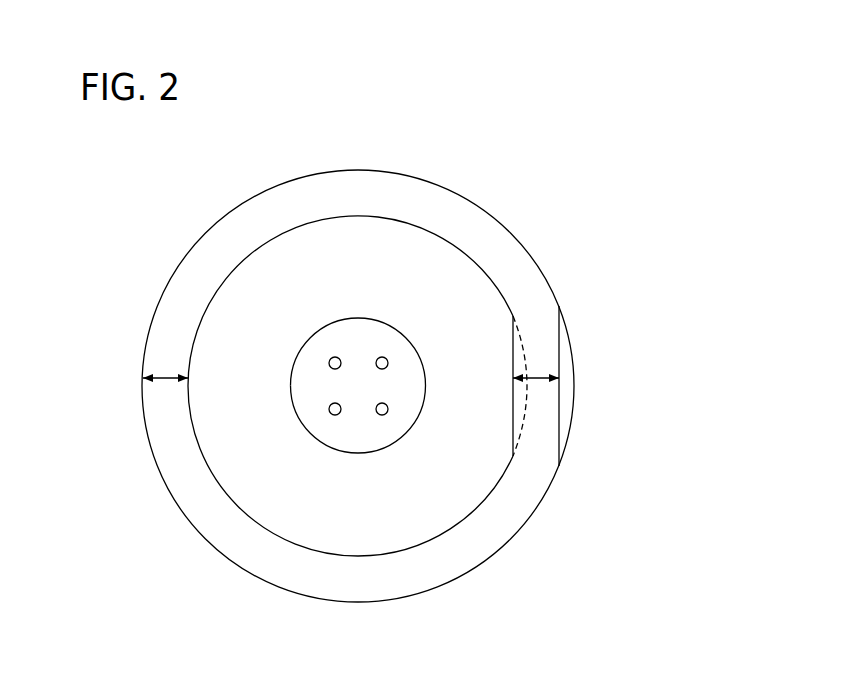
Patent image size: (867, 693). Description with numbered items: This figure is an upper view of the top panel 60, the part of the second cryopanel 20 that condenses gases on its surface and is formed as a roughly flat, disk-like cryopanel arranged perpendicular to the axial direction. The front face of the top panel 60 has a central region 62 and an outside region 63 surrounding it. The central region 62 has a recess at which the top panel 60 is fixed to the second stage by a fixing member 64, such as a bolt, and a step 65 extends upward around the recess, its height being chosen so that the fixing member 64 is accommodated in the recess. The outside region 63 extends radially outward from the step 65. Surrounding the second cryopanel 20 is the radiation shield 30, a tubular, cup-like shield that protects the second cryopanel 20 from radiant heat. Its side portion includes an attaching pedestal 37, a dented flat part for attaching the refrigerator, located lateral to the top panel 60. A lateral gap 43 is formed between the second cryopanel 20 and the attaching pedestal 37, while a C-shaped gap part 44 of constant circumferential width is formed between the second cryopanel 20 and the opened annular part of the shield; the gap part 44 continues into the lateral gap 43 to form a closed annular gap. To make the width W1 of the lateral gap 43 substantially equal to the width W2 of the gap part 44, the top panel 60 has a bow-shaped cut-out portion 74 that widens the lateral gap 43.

The second cryopanel 20 is at (368, 269).
The radiation shield 30 is at (515, 540).
The attaching pedestal 37 is at (562, 415).
The lateral gap 43 is at (535, 443).
The gap part 44 is at (168, 428).
The top panel 60 is at (441, 225).
The central region 62 is at (365, 430).
The outside region 63 is at (410, 520).
The fixing member 64 is at (333, 416).
The step 65 is at (310, 433).
The cut-out portion 74 is at (521, 346).
The width of the lateral gap W1 is at (538, 378).
The width of the gap part W2 is at (163, 387).